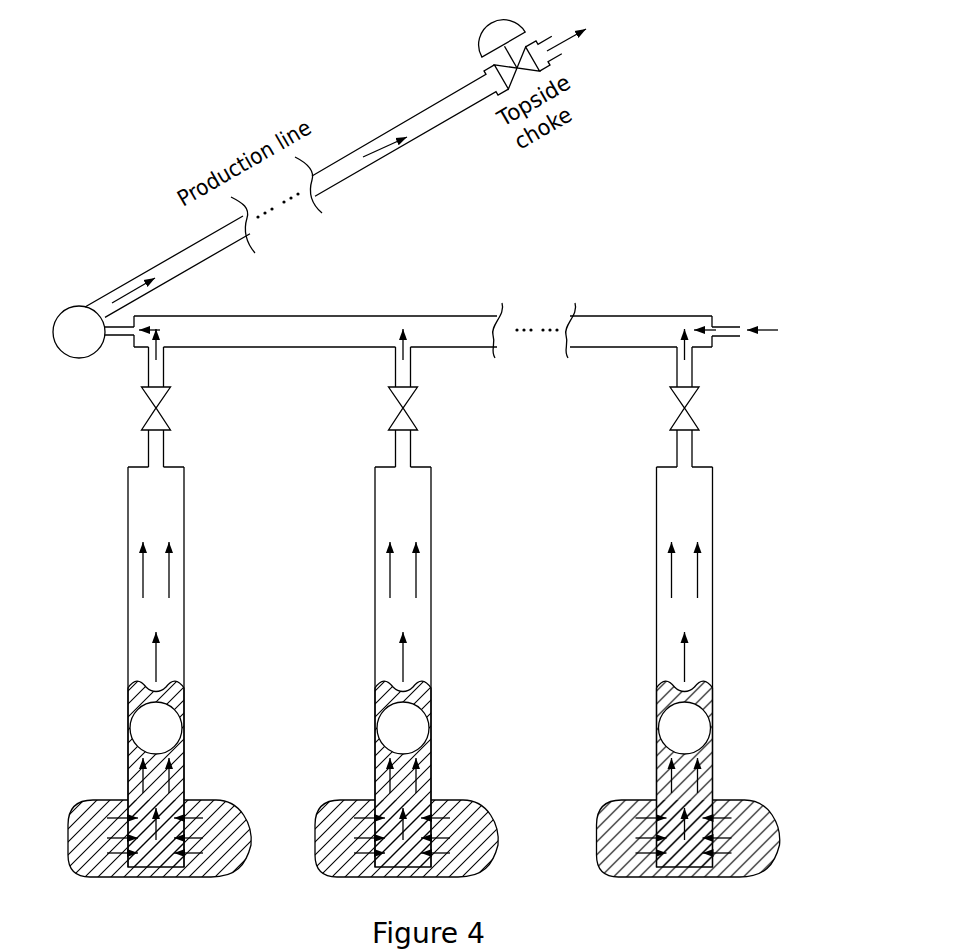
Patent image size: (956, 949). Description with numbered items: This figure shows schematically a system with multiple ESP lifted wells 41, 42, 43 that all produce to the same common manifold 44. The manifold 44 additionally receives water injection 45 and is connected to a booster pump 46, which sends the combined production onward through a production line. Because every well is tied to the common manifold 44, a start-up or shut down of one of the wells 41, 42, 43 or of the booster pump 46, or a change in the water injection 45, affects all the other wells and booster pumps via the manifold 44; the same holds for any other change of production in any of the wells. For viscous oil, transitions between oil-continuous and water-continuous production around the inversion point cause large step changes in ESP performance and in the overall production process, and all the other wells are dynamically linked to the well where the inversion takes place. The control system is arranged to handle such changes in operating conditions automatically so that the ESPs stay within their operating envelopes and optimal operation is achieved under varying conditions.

The ESP lifted well 41 is at (185, 647).
The ESP lifted well 42 is at (402, 659).
The ESP lifted well 43 is at (705, 698).
The manifold 44 is at (393, 315).
The water injection 45 is at (741, 328).
The booster pump 46 is at (70, 308).